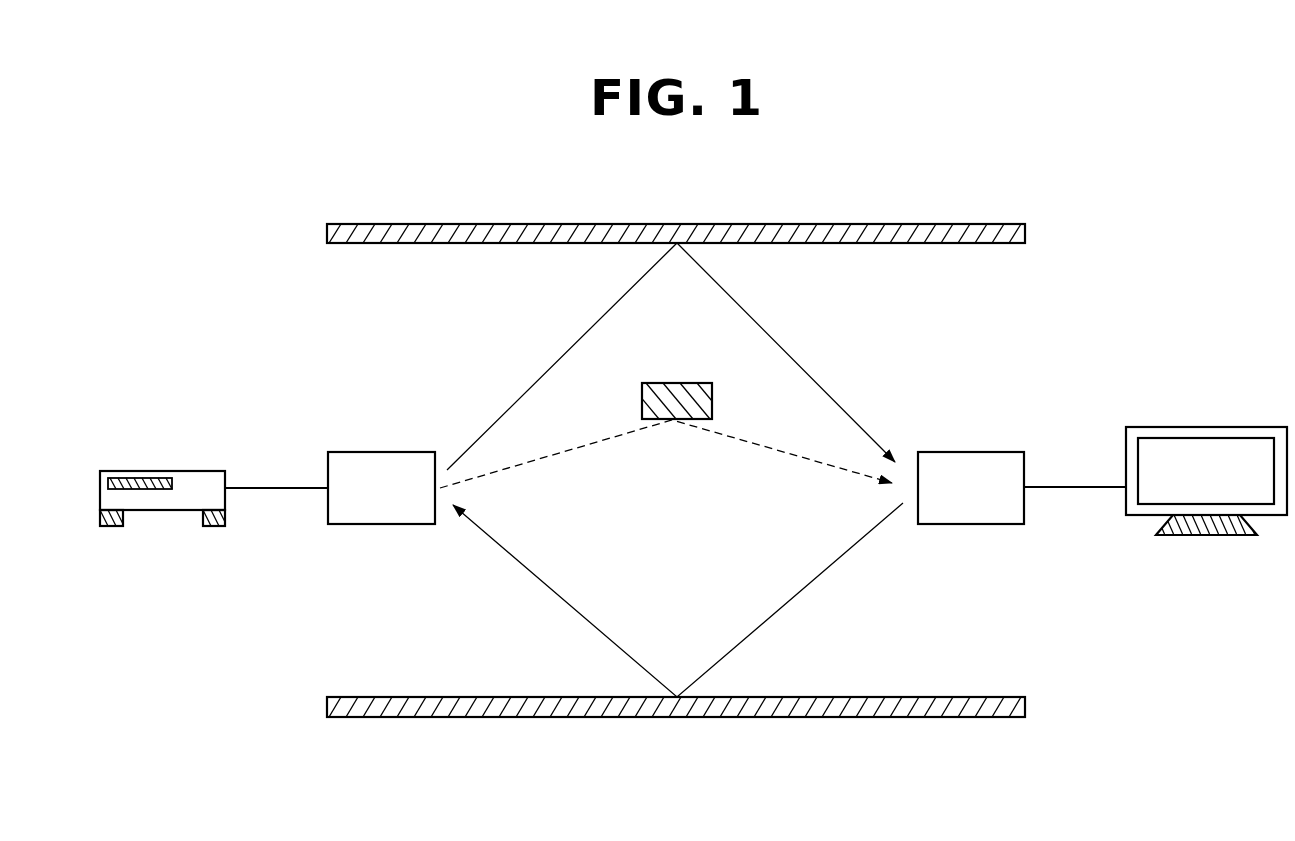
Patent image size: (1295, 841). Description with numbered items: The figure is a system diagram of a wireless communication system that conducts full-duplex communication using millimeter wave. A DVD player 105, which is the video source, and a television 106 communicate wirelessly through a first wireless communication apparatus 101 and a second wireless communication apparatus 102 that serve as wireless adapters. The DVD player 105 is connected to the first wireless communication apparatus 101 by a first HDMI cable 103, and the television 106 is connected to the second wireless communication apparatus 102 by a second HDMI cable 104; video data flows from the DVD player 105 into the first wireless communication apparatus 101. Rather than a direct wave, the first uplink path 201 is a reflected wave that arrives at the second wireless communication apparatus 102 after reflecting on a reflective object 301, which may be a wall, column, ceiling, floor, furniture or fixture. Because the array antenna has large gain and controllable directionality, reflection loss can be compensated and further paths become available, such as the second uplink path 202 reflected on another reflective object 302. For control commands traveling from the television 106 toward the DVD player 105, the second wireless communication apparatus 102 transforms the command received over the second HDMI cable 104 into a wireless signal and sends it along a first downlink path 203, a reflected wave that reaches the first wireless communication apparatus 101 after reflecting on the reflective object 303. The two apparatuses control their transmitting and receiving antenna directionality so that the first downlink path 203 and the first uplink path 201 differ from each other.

The first wireless communication apparatus 101 is at (385, 452).
The second wireless communication apparatus 102 is at (968, 452).
The first HDMI cable 103 is at (275, 489).
The second HDMI cable 104 is at (1073, 488).
The DVD player 105 is at (162, 470).
The television 106 is at (1205, 427).
The first uplink path 201 is at (562, 355).
The second uplink path 202 is at (577, 446).
The first downlink path 203 is at (826, 573).
The reflective object 301 is at (400, 224).
The reflective object 302 is at (677, 382).
The reflective object 303 is at (376, 717).